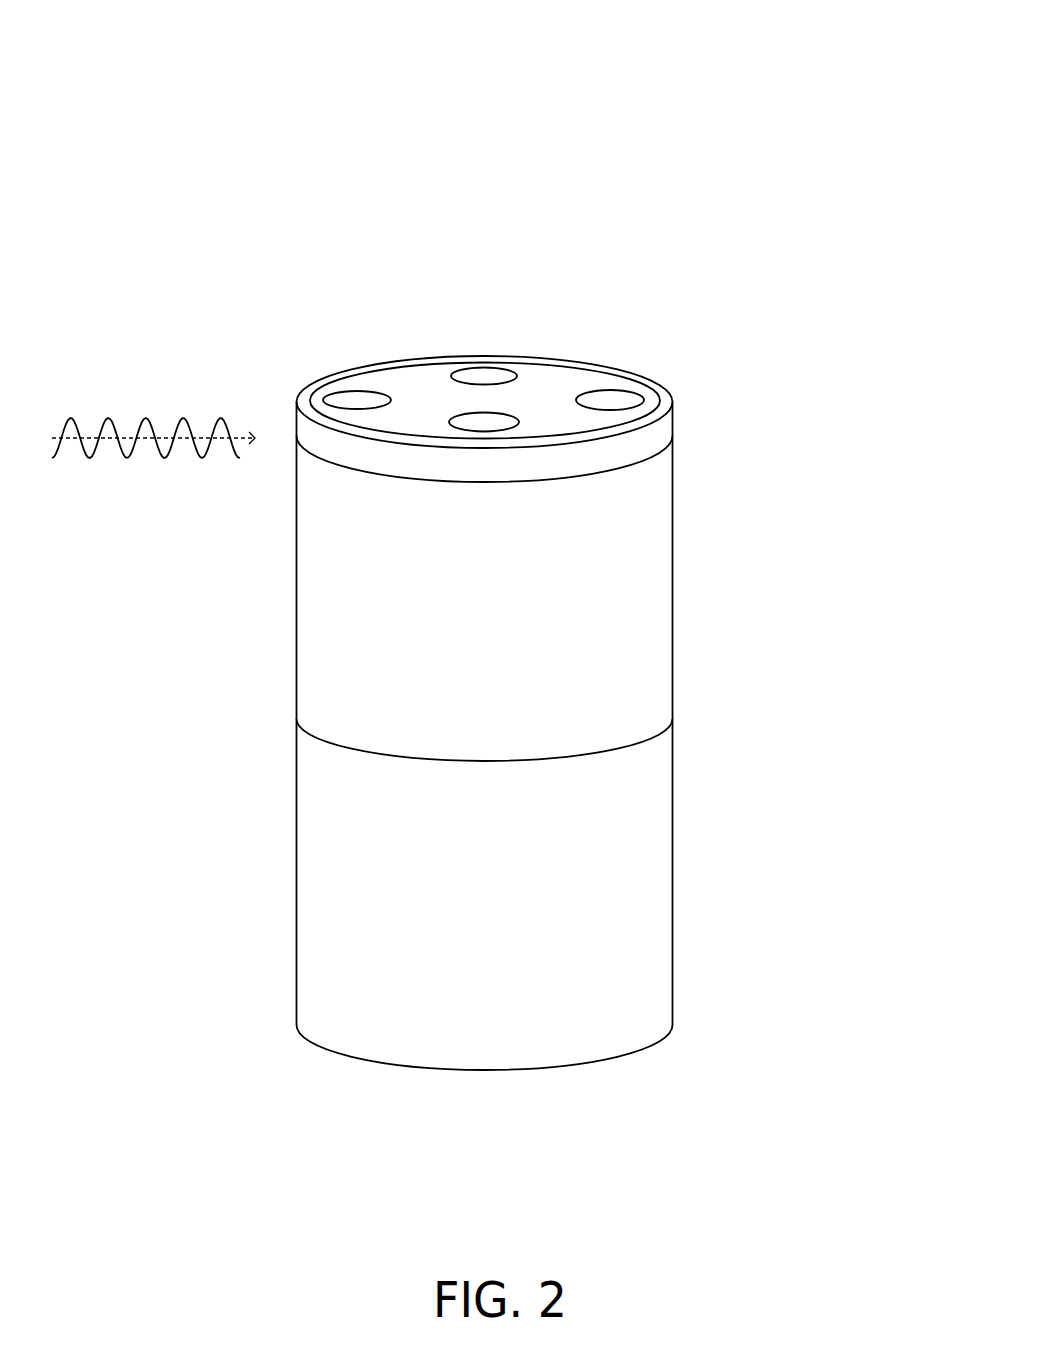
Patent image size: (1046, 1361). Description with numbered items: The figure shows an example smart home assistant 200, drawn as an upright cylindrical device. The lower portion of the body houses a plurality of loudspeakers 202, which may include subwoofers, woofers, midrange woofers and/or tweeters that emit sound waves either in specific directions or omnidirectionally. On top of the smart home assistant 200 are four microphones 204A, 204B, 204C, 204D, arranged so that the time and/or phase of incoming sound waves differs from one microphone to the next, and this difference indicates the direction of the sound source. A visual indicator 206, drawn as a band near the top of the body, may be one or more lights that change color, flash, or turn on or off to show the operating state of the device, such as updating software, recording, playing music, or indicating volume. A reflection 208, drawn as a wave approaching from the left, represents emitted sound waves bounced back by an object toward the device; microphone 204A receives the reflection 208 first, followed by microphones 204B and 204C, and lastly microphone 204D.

The smart home assistant 200 is at (268, 49).
The loudspeakers 202 is at (698, 714).
The microphone 204A is at (352, 401).
The microphone 204B is at (473, 378).
The microphone 204C is at (493, 422).
The microphone 204D is at (617, 400).
The visual indicator 206 is at (633, 447).
The reflection 208 is at (93, 485).